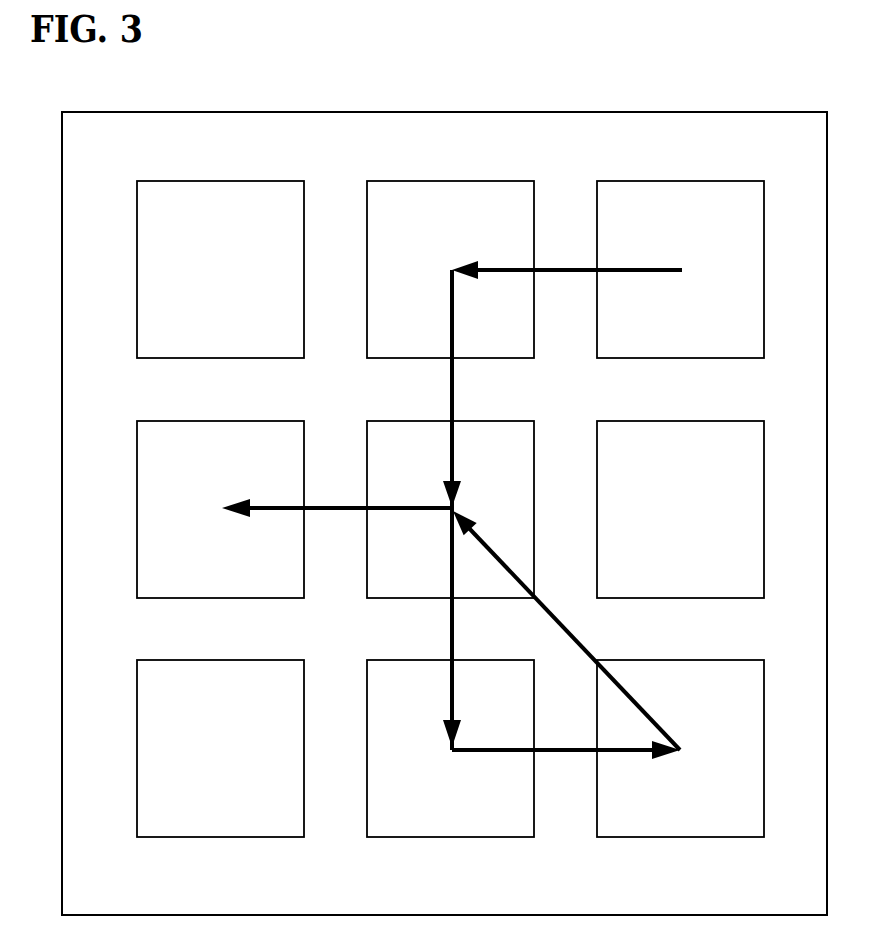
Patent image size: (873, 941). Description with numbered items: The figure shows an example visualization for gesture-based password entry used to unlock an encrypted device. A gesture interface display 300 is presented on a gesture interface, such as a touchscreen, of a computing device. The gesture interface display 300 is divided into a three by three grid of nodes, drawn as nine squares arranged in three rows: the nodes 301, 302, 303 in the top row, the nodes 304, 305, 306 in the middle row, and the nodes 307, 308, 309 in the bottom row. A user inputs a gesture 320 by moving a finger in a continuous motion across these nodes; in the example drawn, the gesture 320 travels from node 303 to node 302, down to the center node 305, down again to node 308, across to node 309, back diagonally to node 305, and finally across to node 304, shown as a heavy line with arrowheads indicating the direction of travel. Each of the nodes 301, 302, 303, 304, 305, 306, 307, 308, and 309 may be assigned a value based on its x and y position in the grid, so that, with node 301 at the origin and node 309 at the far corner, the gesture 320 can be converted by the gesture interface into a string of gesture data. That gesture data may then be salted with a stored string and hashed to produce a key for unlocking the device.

The gesture interface display 300 is at (614, 71).
The node 301 is at (258, 151).
The node 302 is at (498, 151).
The node 303 is at (738, 151).
The node 304 is at (246, 391).
The node 305 is at (514, 392).
The node 306 is at (728, 391).
The node 307 is at (258, 631).
The node 308 is at (514, 631).
The node 309 is at (743, 631).
The gesture 320 is at (589, 240).